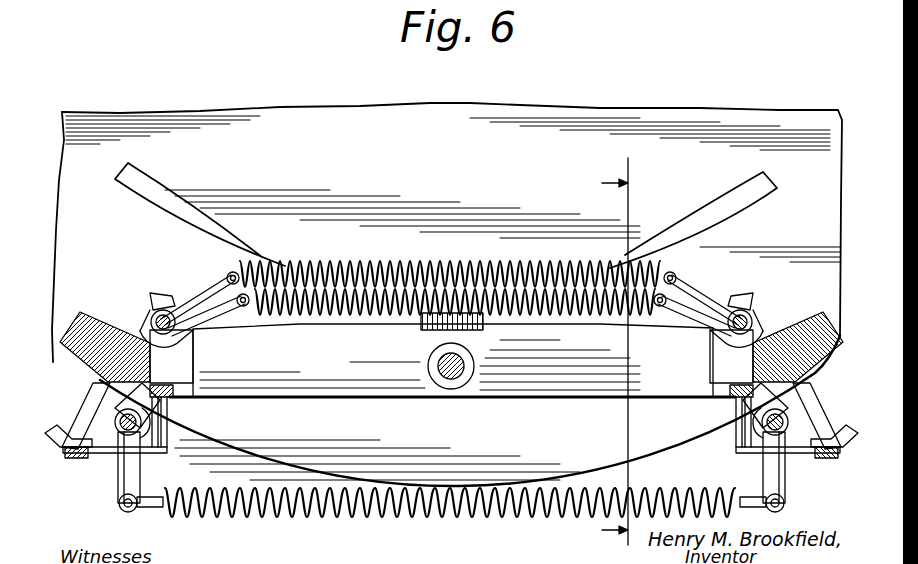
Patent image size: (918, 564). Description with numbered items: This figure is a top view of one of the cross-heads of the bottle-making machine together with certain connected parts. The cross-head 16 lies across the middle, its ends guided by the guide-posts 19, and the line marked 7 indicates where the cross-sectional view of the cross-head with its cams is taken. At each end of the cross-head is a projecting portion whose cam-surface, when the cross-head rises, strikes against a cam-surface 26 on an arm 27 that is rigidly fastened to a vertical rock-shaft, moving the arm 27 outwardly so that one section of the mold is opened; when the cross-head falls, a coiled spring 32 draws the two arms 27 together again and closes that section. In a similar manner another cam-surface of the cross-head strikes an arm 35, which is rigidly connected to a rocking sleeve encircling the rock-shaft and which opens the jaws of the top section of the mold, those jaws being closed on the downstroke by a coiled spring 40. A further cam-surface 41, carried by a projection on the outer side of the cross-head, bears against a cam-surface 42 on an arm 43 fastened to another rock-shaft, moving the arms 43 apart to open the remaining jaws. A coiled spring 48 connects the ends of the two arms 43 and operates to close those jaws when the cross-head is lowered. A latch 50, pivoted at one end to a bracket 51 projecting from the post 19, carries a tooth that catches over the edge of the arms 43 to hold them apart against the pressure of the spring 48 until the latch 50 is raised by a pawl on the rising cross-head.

The section line 7 7 is at (625, 356).
The cross-head 16 is at (452, 355).
The guide-posts 19 is at (451, 347).
The cam-surface 26 is at (755, 326).
The arm 27 is at (697, 300).
The coiled spring 32 is at (257, 313).
The arm 35 is at (670, 278).
The coiled spring 40 is at (283, 263).
The cam-surface 41 is at (142, 410).
The cam-surface 42 is at (148, 437).
The arm 43 is at (778, 479).
The coiled spring 48 is at (241, 510).
The latch 50 is at (100, 458).
The bracket 51 is at (92, 396).